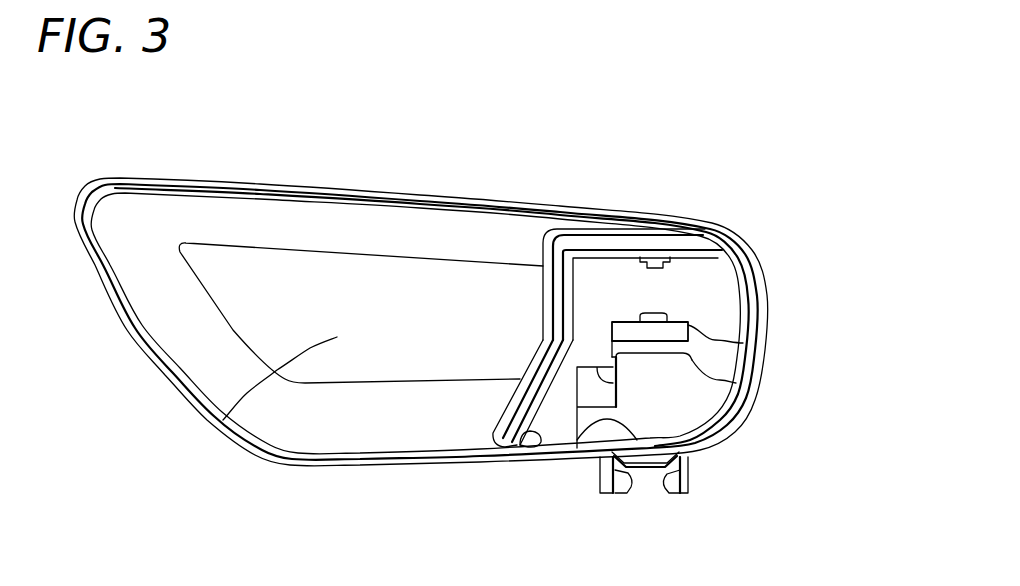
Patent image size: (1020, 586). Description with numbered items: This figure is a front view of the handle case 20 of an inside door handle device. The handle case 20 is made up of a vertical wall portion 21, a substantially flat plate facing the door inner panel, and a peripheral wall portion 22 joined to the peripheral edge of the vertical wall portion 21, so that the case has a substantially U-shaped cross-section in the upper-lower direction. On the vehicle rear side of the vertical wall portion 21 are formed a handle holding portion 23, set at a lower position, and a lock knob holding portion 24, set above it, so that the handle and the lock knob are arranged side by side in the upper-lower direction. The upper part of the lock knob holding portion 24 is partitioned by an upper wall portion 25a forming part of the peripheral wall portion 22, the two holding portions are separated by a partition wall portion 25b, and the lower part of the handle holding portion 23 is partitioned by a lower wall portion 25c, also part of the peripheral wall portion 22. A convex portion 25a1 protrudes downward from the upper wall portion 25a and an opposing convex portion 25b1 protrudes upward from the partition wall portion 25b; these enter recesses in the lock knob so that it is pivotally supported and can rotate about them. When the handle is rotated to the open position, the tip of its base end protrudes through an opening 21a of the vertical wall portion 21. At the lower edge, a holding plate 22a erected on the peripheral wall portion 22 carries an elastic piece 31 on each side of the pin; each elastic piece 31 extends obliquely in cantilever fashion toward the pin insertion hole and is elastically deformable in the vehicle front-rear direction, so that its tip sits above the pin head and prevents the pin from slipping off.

The handle case 20 is at (428, 316).
The vertical wall portion 21 is at (223, 422).
The opening 21a is at (680, 403).
The peripheral wall portion 22 is at (318, 222).
The holding plate 22a is at (598, 472).
The handle holding portion 23 is at (705, 428).
The lock knob holding portion 24 is at (712, 307).
The upper wall portion 25a is at (612, 247).
The convex portion 25a1 is at (663, 257).
The partition wall portion 25b is at (633, 335).
The convex portion 25b1 is at (657, 313).
The lower wall portion 25c is at (572, 458).
The elastic piece 31 is at (623, 490).